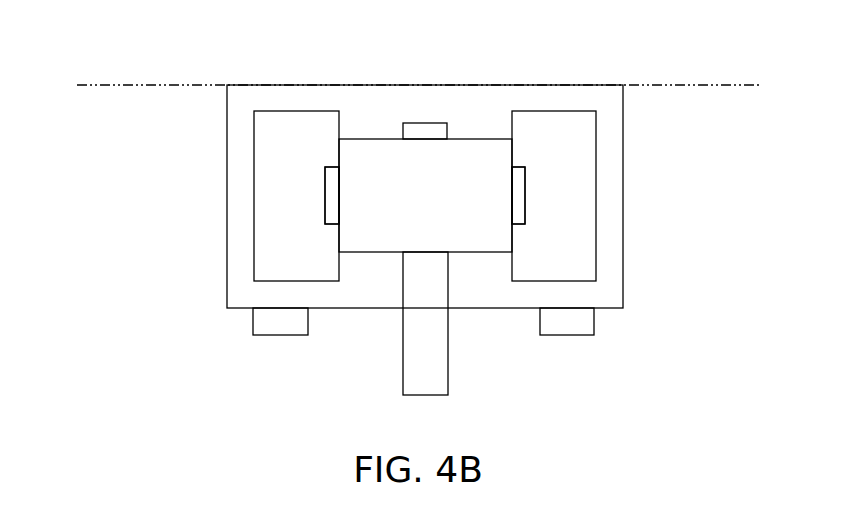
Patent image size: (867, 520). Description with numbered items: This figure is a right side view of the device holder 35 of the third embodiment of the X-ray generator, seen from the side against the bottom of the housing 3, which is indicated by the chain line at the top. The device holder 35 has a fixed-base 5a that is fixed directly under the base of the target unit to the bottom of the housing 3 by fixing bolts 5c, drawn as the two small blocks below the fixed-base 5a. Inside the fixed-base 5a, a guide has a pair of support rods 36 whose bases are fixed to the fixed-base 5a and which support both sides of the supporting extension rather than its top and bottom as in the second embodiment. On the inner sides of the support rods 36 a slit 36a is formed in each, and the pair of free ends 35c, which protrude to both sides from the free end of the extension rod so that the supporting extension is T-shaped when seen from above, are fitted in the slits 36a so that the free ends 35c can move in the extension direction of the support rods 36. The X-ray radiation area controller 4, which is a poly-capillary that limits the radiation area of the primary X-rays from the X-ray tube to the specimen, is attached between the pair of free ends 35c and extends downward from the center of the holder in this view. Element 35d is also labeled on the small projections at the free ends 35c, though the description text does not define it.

The housing 3 is at (702, 85).
The device holder 35 is at (652, 158).
The free end 35c is at (362, 138).
The protrusion 35d is at (325, 193).
The support rod 36 is at (292, 282).
The slit 36a is at (327, 213).
The X-ray radiation area controller 4 is at (448, 335).
The fixed-base 5a is at (623, 183).
The fixing bolt 5c is at (262, 335).